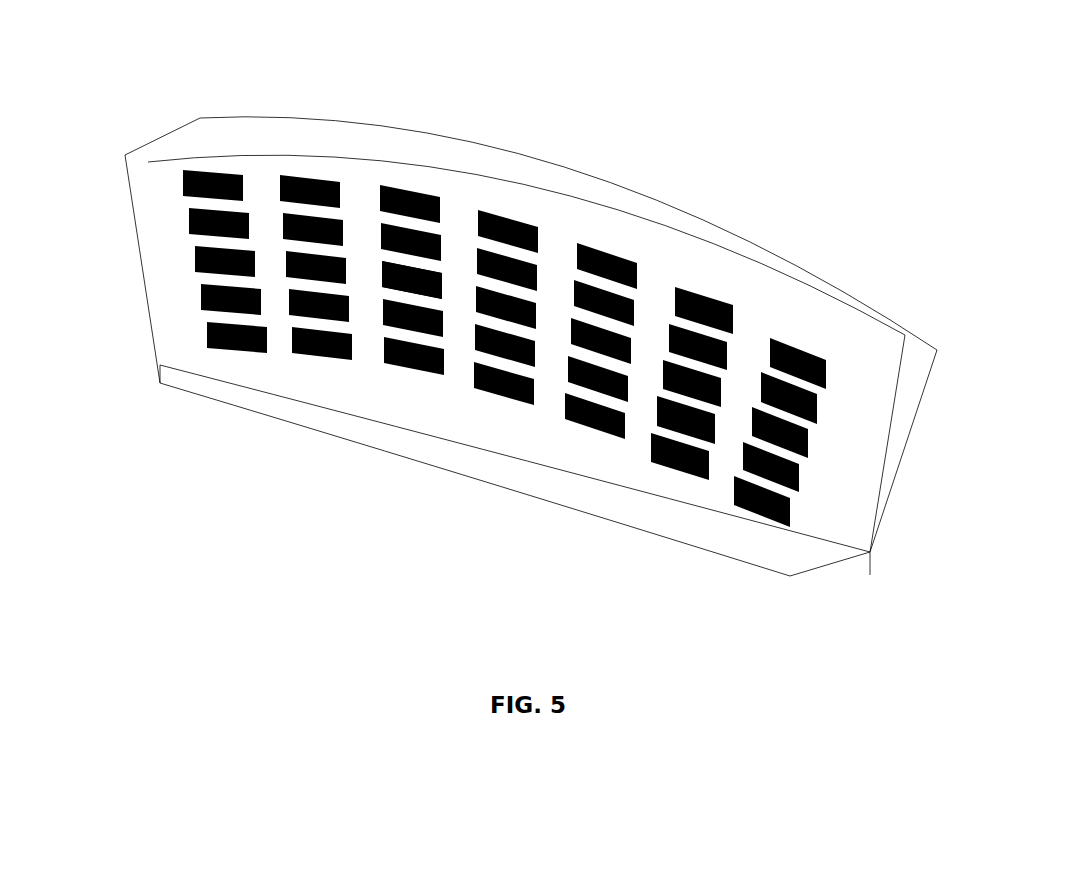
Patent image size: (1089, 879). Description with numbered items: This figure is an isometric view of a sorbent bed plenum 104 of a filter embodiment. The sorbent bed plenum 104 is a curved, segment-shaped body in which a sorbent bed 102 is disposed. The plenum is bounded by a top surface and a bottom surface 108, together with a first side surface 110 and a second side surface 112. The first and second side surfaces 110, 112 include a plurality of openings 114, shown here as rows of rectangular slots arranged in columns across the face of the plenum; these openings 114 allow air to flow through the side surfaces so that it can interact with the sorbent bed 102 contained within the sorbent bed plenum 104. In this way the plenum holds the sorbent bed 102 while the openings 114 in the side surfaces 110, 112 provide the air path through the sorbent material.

The openings 114 is at (410, 190).
The second side surface 112 is at (802, 270).
The sorbent bed plenum 104 is at (594, 337).
The sorbent bed 102 is at (400, 330).
The first side surface 110 is at (612, 455).
The bottom surface 108 is at (826, 570).